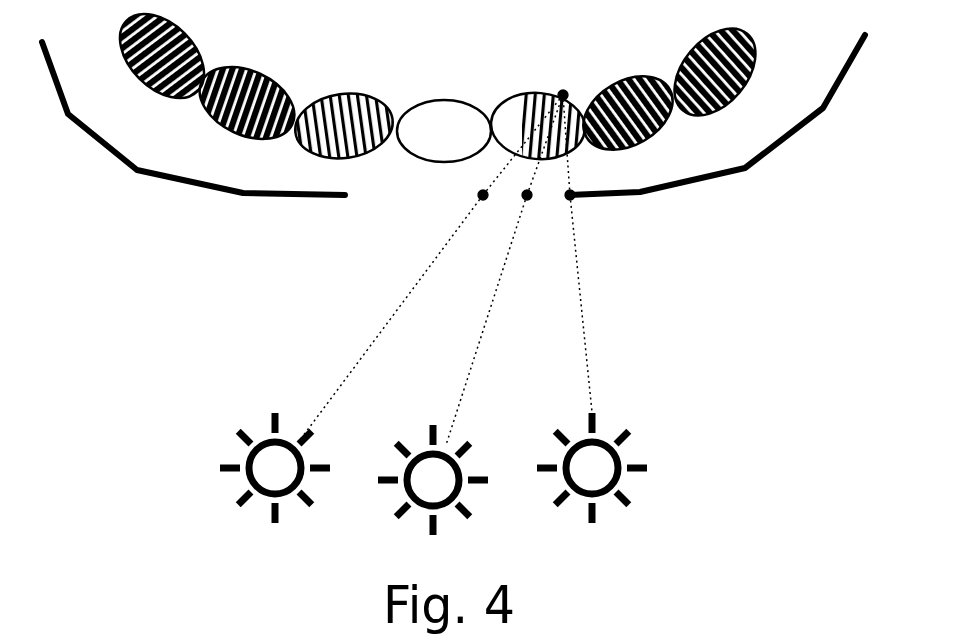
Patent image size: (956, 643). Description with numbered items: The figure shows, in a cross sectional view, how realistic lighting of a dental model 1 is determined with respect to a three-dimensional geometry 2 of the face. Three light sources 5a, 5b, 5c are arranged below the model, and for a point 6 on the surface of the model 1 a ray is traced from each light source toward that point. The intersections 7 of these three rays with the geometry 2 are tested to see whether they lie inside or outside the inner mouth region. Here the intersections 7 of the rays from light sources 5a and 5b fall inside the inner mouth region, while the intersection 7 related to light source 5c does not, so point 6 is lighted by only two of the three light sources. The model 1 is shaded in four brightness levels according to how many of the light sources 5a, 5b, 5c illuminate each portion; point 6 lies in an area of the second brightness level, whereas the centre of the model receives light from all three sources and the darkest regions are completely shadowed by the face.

The dental model 1 is at (690, 46).
The 3D geometry 2 is at (705, 186).
The light source 5a is at (213, 492).
The light source 5b is at (373, 518).
The light source 5c is at (652, 442).
The point 6 is at (563, 90).
The intersections 7 is at (492, 202).